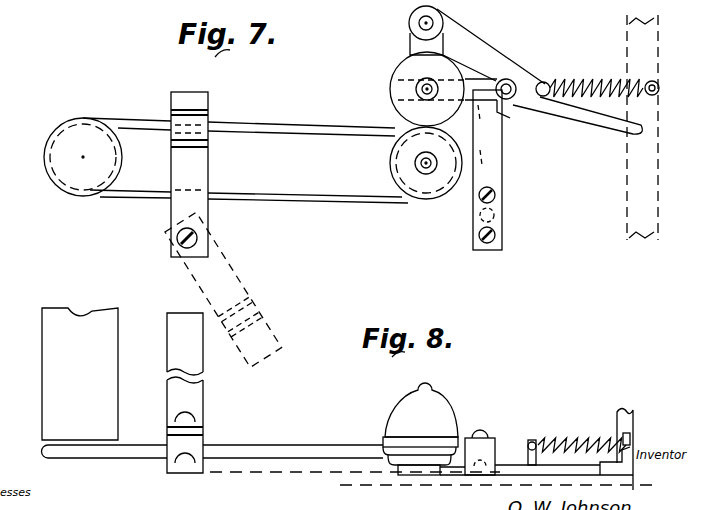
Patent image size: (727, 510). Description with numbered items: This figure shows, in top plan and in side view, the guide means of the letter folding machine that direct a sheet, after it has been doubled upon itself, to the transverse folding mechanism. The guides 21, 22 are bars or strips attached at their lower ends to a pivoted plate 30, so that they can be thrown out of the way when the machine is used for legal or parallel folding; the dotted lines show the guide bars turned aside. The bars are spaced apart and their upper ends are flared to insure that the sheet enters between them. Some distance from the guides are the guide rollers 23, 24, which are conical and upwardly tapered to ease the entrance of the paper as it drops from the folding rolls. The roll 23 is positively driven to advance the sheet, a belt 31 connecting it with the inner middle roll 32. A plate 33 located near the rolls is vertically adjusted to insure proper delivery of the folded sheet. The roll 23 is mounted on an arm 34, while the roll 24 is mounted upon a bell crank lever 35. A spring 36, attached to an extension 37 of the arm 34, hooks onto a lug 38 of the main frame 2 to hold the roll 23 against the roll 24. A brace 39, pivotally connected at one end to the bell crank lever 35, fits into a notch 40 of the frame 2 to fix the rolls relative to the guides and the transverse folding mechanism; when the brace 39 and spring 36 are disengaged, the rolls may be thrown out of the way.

In FIG. 7, the frame 2 is at (652, 231).
In FIG. 7, the guide 21 is at (208, 145).
In FIG. 8, the guide 21 is at (203, 411).
In FIG. 7, the guide 22 is at (208, 109).
In FIG. 7, the guide roller 23 is at (395, 170).
In FIG. 8, the guide roller 23 is at (450, 430).
In FIG. 7, the guide roller 24 is at (395, 86).
In FIG. 7, the pivoted plate 30 is at (208, 212).
In FIG. 8, the pivoted plate 30 is at (203, 437).
In FIG. 7, the belt 31 is at (355, 201).
In FIG. 8, the belt 31 is at (290, 456).
In FIG. 7, the inner middle roll 32 is at (62, 177).
In FIG. 8, the inner middle roll 32 is at (80, 364).
In FIG. 7, the plate 33 is at (503, 176).
In FIG. 8, the plate 33 is at (496, 447).
In FIG. 7, the arm 34 is at (506, 120).
In FIG. 8, the arm 34 is at (458, 476).
In FIG. 7, the bell crank lever 35 is at (410, 41).
In FIG. 7, the spring 36 is at (596, 80).
In FIG. 8, the spring 36 is at (572, 440).
In FIG. 7, the extension 37 is at (522, 85).
In FIG. 8, the extension 37 is at (534, 440).
In FIG. 7, the lug 38 is at (660, 86).
In FIG. 8, the lug 38 is at (633, 445).
In FIG. 7, the brace 39 is at (600, 118).
In FIG. 8, the brace 39 is at (546, 466).
In FIG. 7, the notch 40 is at (643, 131).